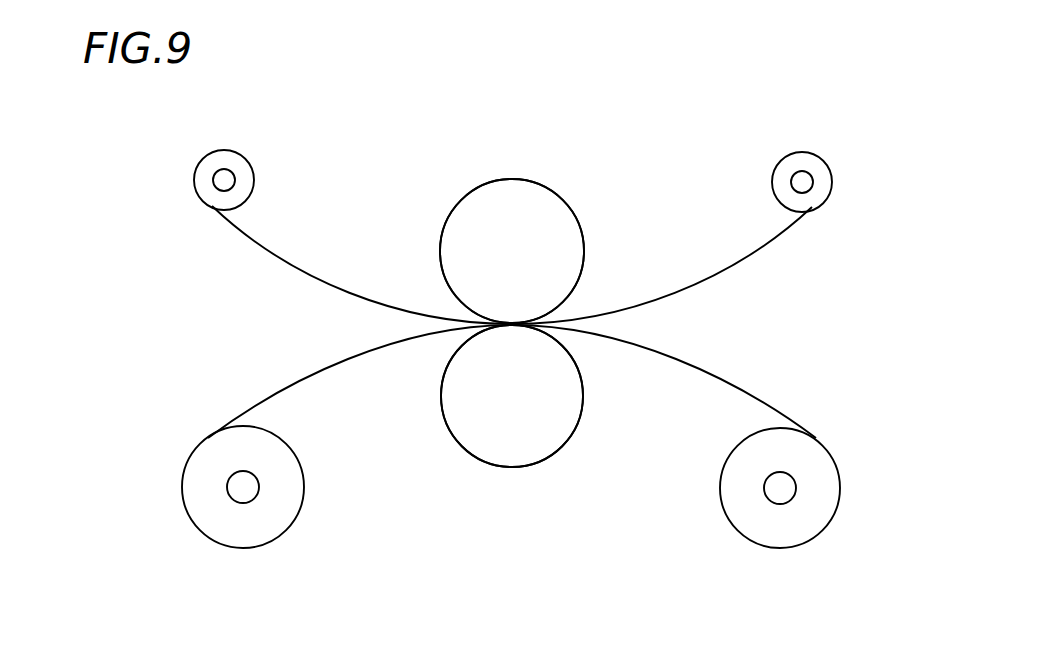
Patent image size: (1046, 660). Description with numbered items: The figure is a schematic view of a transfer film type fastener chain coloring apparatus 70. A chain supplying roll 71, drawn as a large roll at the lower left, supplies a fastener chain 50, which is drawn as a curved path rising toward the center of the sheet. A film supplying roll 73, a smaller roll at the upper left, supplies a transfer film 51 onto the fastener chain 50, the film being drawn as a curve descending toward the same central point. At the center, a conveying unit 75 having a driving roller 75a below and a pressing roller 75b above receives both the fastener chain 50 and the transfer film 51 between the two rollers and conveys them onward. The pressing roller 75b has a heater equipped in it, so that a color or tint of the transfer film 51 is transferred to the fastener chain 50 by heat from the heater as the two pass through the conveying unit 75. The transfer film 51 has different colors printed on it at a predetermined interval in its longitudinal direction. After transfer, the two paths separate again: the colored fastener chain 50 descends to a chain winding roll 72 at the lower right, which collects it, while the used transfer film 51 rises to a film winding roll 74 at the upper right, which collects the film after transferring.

The fastener chain coloring apparatus 70 is at (692, 128).
The fastener chain 50 is at (285, 382).
The transfer film 51 is at (283, 265).
The chain supplying roll 71 is at (233, 532).
The chain winding roll 72 is at (780, 532).
The film supplying roll 73 is at (213, 162).
The film winding roll 74 is at (808, 163).
The conveying unit 75 is at (512, 178).
The driving roller 75a is at (509, 447).
The pressing roller 75b is at (553, 227).